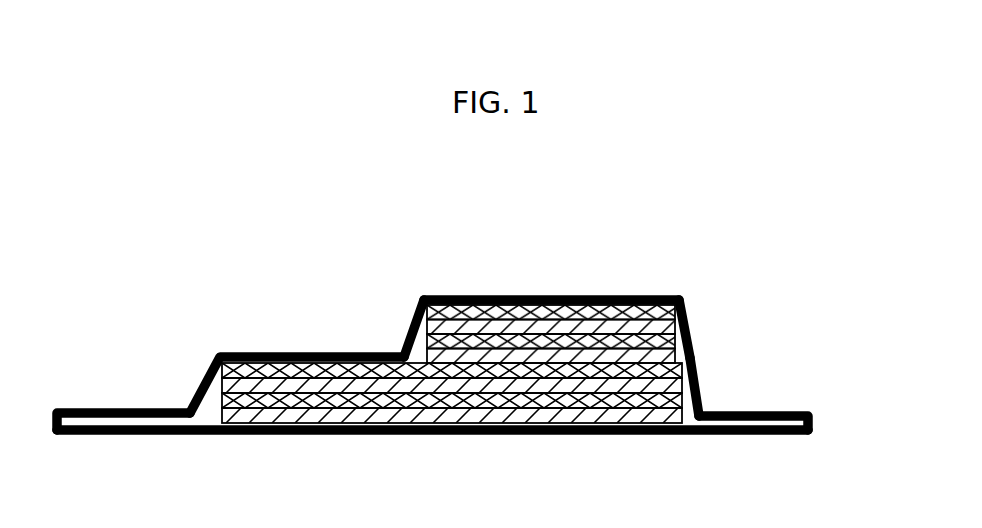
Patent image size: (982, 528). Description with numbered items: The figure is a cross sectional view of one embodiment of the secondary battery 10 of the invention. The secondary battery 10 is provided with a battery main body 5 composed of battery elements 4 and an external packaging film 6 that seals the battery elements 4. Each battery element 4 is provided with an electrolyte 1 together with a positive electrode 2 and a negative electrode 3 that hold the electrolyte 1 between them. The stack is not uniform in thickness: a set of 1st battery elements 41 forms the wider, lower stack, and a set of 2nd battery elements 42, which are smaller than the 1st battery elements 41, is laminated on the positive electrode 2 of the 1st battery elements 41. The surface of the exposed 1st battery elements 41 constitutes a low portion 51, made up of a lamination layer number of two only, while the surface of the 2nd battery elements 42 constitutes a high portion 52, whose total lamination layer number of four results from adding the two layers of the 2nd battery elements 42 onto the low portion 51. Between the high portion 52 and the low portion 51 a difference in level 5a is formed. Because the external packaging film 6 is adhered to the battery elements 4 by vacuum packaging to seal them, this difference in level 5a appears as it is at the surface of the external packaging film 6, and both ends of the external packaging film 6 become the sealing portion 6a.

The electrolyte 1 is at (581, 312).
The positive electrode 2 is at (560, 318).
The negative electrode 3 is at (534, 330).
The battery element 4 is at (615, 233).
The battery main body 5 is at (460, 303).
The difference in level 5a is at (407, 352).
The external packaging film 6 is at (441, 297).
The sealing portion 6a is at (128, 420).
The secondary battery 10 is at (422, 252).
The 1st battery elements 41 is at (702, 387).
The 2nd battery elements 42 is at (692, 332).
The low portion 51 is at (250, 353).
The high portion 52 is at (633, 297).